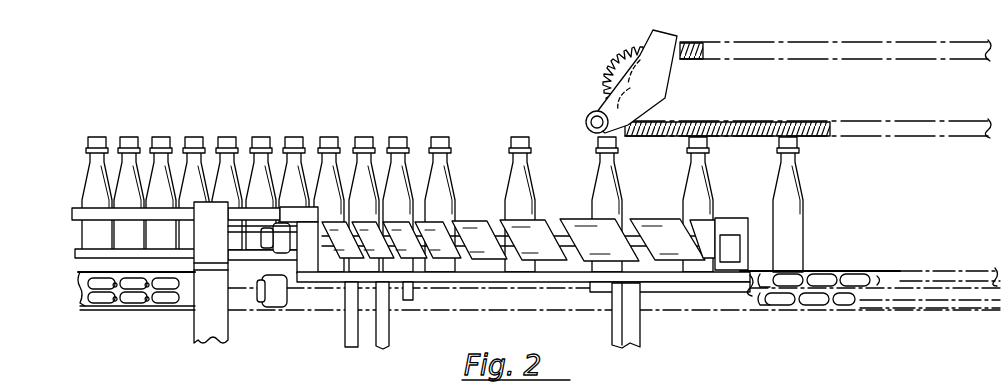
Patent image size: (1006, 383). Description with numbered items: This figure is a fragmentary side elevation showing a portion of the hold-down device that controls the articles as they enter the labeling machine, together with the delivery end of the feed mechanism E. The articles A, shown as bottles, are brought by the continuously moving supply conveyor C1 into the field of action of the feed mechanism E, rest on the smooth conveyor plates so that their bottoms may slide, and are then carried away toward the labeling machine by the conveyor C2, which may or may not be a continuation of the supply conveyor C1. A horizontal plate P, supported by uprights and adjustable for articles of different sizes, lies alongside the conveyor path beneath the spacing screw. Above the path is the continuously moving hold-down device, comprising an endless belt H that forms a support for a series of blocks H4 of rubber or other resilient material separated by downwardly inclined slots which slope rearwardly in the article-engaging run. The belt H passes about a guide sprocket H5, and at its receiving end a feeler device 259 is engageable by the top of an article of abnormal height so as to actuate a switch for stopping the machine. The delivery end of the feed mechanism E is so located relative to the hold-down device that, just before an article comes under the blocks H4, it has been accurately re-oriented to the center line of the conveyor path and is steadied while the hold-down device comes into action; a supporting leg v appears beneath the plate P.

The articles A is at (127, 183).
The supply conveyor C1 is at (85, 268).
The conveyor C2 is at (823, 271).
The feed mechanism E is at (475, 162).
The endless belt H is at (805, 60).
The blocks H4 is at (709, 125).
The guide sprocket H5 is at (618, 62).
The feeler device 259 is at (590, 114).
The horizontal plate P is at (477, 280).
The leg v is at (386, 343).